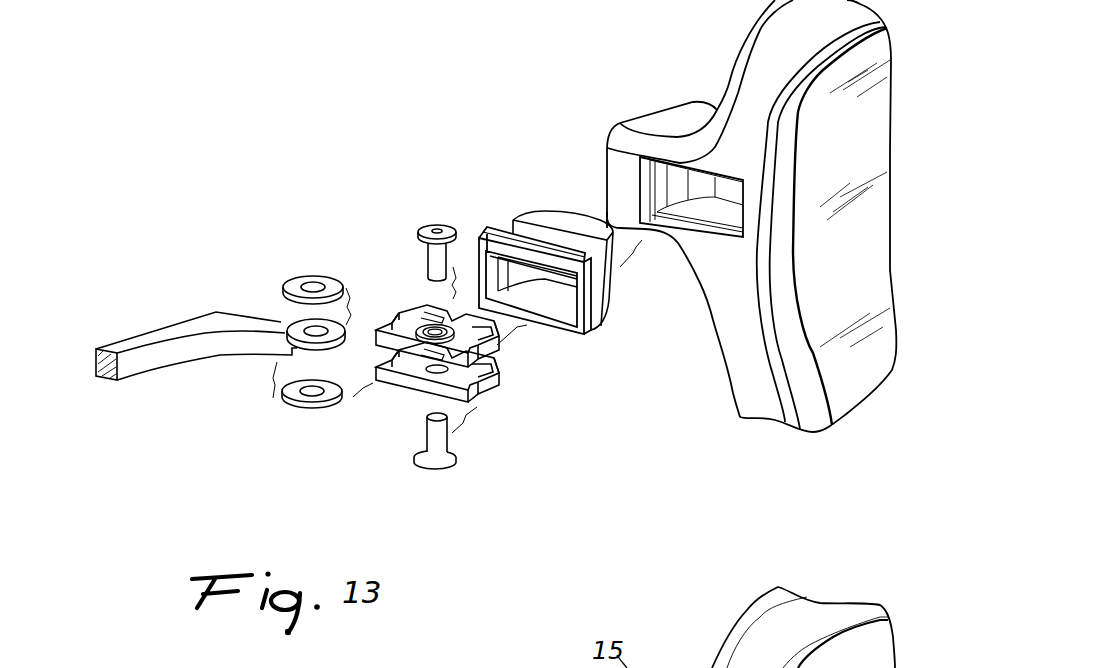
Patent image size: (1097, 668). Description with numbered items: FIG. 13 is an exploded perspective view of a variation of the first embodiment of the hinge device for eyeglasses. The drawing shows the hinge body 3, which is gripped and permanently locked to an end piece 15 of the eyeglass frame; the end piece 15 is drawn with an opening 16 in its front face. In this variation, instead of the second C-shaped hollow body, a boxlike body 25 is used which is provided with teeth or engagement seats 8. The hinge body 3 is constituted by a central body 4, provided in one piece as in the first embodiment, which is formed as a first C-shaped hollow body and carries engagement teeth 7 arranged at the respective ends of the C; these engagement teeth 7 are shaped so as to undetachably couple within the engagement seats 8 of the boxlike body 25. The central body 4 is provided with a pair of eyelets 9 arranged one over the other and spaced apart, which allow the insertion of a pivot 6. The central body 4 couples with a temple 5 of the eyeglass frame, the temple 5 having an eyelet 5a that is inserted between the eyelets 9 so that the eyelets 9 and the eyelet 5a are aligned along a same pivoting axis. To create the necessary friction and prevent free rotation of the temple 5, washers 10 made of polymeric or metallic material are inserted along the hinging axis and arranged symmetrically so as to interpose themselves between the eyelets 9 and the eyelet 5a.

The hinge body 3 is at (530, 390).
The central body 4 is at (392, 378).
The temple 5 is at (158, 334).
The eyelet 5a is at (286, 320).
The pivot 6 is at (423, 227).
The engagement teeth 7 is at (387, 320).
The engagement seats 8 is at (503, 273).
The eyelets 9 is at (427, 325).
The washers 10 is at (300, 277).
The end piece 15 is at (675, 117).
The opening 16 is at (700, 233).
The boxlike body 25 is at (525, 230).